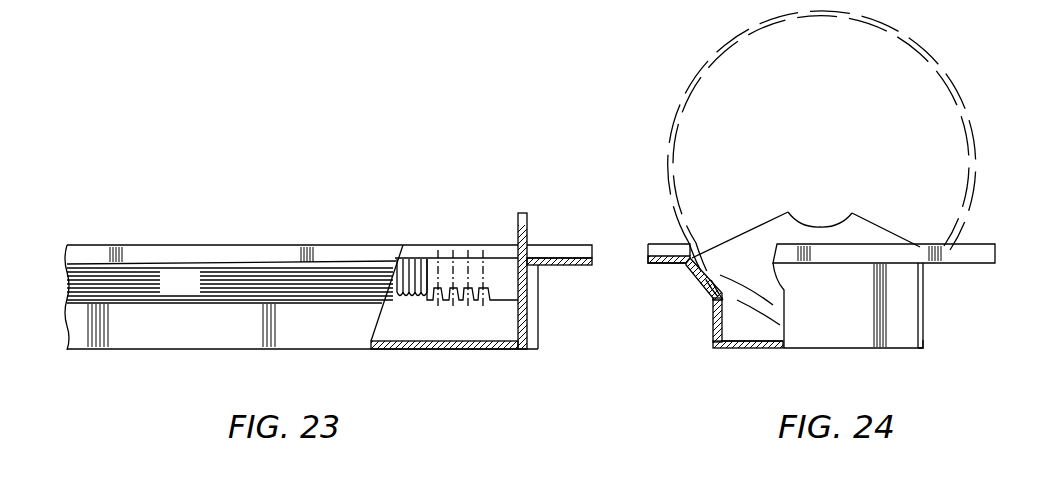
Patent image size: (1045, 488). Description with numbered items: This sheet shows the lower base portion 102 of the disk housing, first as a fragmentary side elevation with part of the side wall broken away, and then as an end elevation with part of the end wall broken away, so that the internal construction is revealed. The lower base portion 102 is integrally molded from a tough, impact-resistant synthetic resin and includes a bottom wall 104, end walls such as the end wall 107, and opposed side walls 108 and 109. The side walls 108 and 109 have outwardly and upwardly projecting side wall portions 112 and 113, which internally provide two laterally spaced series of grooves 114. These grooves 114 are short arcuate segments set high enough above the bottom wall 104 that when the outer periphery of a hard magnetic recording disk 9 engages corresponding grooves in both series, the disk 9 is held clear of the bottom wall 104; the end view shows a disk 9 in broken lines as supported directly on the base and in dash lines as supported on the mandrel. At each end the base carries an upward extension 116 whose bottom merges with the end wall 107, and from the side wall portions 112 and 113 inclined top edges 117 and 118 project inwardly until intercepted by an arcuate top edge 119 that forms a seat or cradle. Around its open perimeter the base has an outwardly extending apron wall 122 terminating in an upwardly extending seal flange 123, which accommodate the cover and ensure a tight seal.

In FIG. 24, the hard magnetic recording disk 9 is at (736, 38).
In FIG. 23, the lower base portion 102 is at (502, 353).
In FIG. 24, the lower base portion 102 is at (717, 354).
In FIG. 24, the bottom wall 104 is at (760, 350).
In FIG. 24, the end wall 107 is at (862, 310).
In FIG. 23, the side wall 108 is at (172, 335).
In FIG. 24, the side wall 108 is at (715, 330).
In FIG. 24, the side wall 109 is at (925, 337).
In FIG. 23, the side wall portion 112 is at (195, 295).
In FIG. 24, the side wall portion 112 is at (703, 287).
In FIG. 24, the side wall portion 113 is at (925, 298).
In FIG. 23, the grooves 114 is at (430, 257).
In FIG. 24, the grooves 114 is at (713, 272).
In FIG. 24, the upward extension 116 is at (782, 227).
In FIG. 23, the inclined top edge 117 is at (525, 235).
In FIG. 24, the inclined top edge 117 is at (742, 231).
In FIG. 24, the inclined top edge 118 is at (880, 224).
In FIG. 24, the arcuate top edge 119 is at (844, 213).
In FIG. 23, the apron wall 122 is at (558, 267).
In FIG. 24, the apron wall 122 is at (665, 266).
In FIG. 23, the seal flange 123 is at (593, 247).
In FIG. 24, the seal flange 123 is at (973, 247).